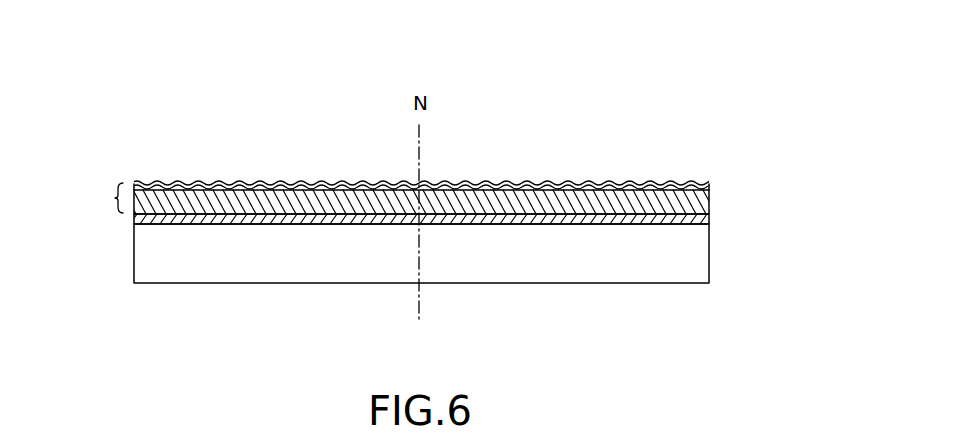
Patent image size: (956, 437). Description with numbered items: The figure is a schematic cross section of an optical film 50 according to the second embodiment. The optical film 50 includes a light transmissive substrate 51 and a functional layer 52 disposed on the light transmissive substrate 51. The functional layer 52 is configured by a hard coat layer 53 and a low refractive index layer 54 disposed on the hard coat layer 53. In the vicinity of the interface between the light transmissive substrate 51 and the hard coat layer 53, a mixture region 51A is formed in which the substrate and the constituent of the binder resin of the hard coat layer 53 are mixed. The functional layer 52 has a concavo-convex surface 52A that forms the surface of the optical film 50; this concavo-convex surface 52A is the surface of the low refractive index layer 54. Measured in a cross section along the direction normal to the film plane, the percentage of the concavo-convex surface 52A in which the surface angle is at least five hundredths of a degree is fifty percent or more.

The optical film 50 is at (543, 138).
The light transmissive substrate 51 is at (697, 250).
The mixture region 51A is at (700, 217).
The functional layer 52 is at (106, 198).
The concavo-convex surface 52A is at (612, 183).
The hard coat layer 53 is at (700, 197).
The low refractive index layer 54 is at (708, 184).